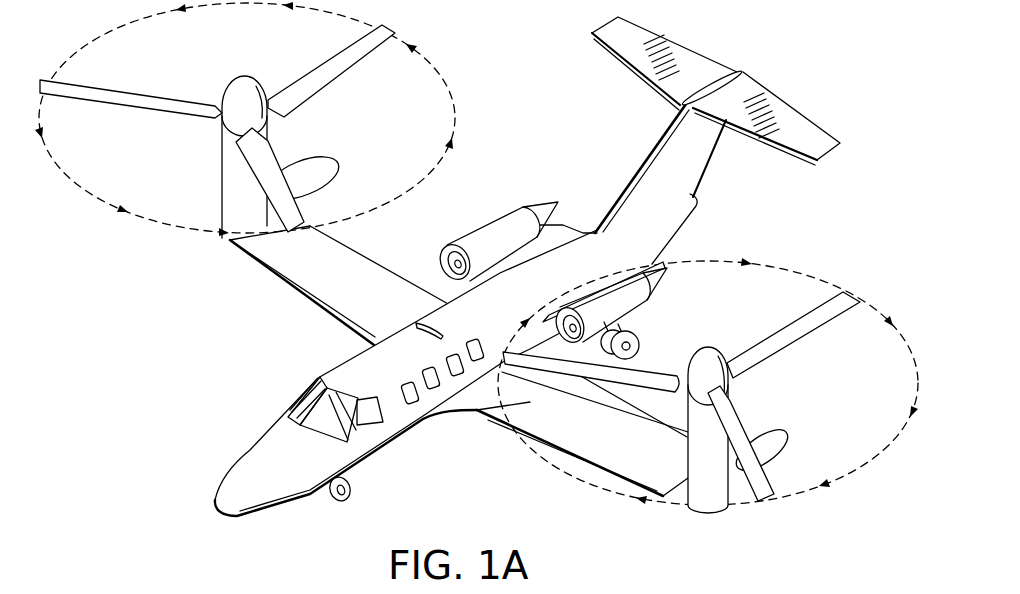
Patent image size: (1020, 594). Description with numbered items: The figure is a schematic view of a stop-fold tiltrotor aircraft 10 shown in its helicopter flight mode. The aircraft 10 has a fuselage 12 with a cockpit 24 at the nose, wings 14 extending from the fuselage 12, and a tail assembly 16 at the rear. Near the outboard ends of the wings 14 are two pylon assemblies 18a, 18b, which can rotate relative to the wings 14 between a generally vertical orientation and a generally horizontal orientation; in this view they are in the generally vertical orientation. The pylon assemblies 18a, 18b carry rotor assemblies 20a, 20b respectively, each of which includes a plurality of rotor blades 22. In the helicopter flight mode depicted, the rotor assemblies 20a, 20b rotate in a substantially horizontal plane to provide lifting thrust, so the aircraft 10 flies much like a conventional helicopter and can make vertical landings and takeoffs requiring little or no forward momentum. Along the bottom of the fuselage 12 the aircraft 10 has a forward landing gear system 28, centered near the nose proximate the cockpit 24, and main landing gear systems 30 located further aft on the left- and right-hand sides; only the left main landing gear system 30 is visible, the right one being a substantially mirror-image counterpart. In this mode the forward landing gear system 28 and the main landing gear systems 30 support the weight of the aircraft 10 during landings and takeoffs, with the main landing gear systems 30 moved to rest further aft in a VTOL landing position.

The stop-fold tiltrotor aircraft 10 is at (476, 278).
The fuselage 12 is at (294, 484).
The wings 14 is at (330, 294).
The tail assembly 16 is at (693, 63).
The pylon assembly 18a is at (687, 459).
The pylon assembly 18b is at (221, 164).
The rotor assembly 20a is at (777, 381).
The rotor assembly 20b is at (236, 64).
The rotor blades 22 is at (317, 73).
The cockpit 24 is at (294, 408).
The forward landing gear system 28 is at (352, 493).
The main landing gear system 30 is at (642, 340).